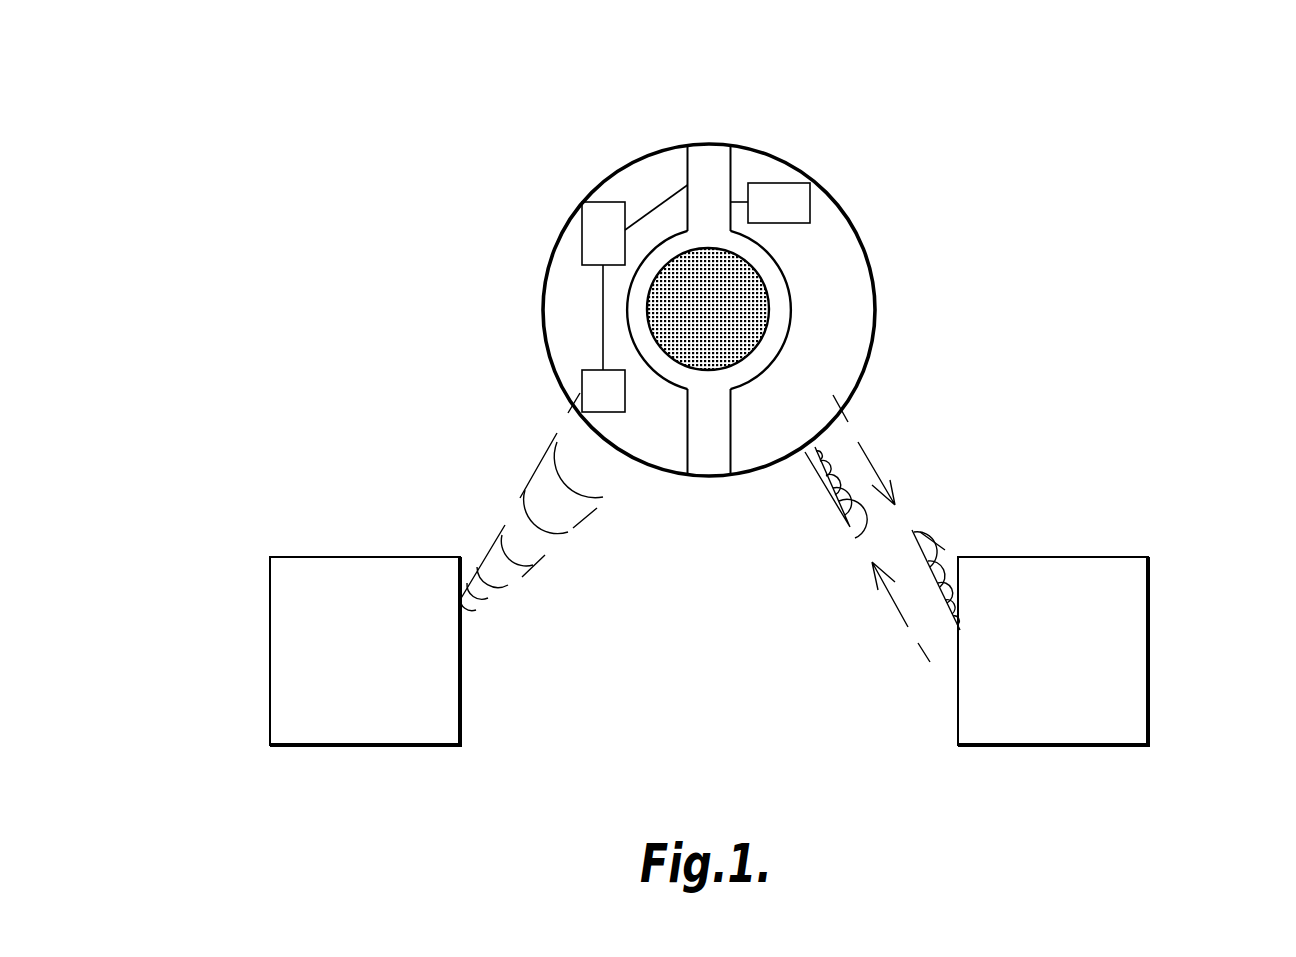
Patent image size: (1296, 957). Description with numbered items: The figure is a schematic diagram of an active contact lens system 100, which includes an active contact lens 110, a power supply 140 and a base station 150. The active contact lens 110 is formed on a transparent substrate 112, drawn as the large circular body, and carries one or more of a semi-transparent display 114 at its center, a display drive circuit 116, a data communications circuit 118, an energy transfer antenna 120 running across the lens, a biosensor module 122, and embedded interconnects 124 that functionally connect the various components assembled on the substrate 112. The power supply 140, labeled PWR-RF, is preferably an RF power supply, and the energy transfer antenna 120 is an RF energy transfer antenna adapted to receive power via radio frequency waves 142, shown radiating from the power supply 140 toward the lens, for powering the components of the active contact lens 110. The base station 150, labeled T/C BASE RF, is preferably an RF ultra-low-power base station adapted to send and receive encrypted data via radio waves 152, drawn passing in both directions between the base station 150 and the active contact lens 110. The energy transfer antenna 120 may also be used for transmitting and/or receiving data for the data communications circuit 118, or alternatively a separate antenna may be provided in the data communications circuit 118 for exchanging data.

The active contact lens system 100 is at (951, 113).
The active contact lens 110 is at (798, 142).
The transparent substrate 112 is at (833, 352).
The semi-transparent display 114 is at (752, 283).
The display drive circuit 116 is at (784, 198).
The data communications circuit 118 is at (595, 222).
The energy transfer antenna 120 is at (706, 150).
The biosensor module 122 is at (587, 390).
The embedded interconnects 124 is at (603, 315).
The power supply 140 is at (270, 650).
The radio frequency waves 142 is at (513, 513).
The base station 150 is at (1148, 648).
The radio waves 152 is at (912, 527).